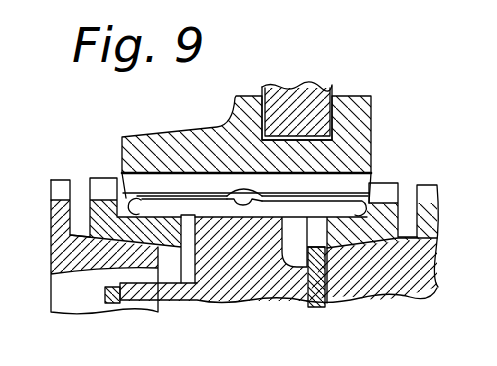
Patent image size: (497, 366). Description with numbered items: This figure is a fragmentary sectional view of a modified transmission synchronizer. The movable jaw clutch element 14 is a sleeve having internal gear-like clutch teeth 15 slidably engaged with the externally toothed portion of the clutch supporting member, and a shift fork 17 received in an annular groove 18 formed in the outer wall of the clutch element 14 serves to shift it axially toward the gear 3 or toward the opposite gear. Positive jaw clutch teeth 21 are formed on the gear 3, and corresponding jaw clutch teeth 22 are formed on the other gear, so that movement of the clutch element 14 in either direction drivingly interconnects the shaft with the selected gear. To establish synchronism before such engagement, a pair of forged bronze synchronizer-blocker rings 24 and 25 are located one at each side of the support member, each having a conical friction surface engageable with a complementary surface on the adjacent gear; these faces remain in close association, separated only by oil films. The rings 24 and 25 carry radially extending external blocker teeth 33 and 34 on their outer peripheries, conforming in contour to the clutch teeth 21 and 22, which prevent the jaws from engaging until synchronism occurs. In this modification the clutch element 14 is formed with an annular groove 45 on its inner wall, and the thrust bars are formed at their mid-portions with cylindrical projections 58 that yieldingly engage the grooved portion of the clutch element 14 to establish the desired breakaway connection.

The gear 3 is at (52, 269).
The movable jaw clutch element 14 is at (360, 108).
The internal clutch teeth 15 is at (170, 178).
The shift fork 17 is at (317, 88).
The annular groove 18 is at (263, 105).
The positive jaw clutch teeth 21 is at (55, 179).
The positive jaw clutch teeth 22 is at (437, 194).
The synchronizer-blocker ring 24 is at (110, 232).
The synchronizer-blocker ring 25 is at (362, 232).
The blocker teeth 33 is at (97, 178).
The blocker teeth 34 is at (395, 183).
The annular groove 45 is at (258, 188).
The cylindrical projection 58 is at (256, 204).